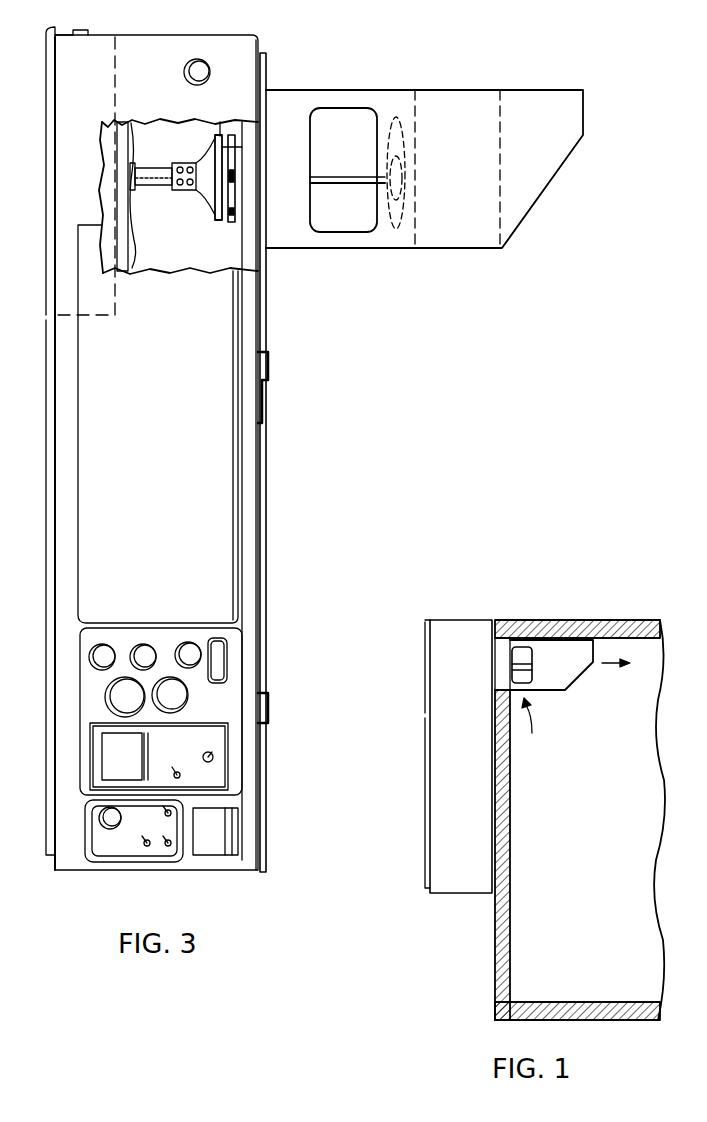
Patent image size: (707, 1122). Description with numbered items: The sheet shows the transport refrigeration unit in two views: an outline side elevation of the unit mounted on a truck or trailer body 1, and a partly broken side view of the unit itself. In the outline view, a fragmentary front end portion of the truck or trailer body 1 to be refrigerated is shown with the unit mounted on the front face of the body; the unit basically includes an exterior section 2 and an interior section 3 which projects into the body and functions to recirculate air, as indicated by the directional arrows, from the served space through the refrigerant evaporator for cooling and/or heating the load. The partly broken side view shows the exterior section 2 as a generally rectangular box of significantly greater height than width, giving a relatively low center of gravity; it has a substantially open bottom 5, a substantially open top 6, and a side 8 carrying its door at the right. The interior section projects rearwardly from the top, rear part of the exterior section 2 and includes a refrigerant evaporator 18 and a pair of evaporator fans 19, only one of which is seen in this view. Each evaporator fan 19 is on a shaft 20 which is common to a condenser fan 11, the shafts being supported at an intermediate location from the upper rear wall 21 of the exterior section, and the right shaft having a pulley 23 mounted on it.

In FIG. 1, the truck or trailer body 1 is at (598, 620).
In FIG. 3, the exterior section 2 is at (157, 43).
In FIG. 1, the exterior section 2 is at (458, 630).
In FIG. 1, the interior section 3 is at (555, 690).
In FIG. 3, the bottom 5 is at (193, 872).
In FIG. 3, the top 6 is at (98, 35).
In FIG. 3, the side 8 is at (223, 495).
In FIG. 3, the condenser fan 11 is at (134, 243).
In FIG. 3, the refrigerant evaporator 18 is at (478, 105).
In FIG. 3, the evaporator fan 19 is at (400, 103).
In FIG. 3, the shaft 20 is at (145, 172).
In FIG. 3, the upper rear wall 21 is at (268, 72).
In FIG. 3, the pulley 23 is at (215, 205).